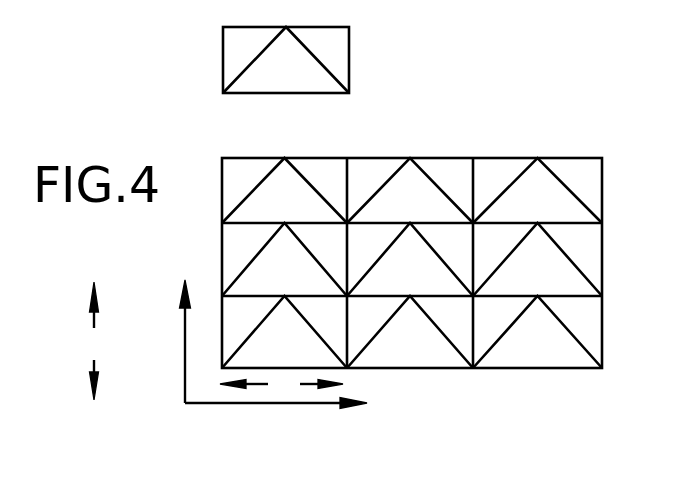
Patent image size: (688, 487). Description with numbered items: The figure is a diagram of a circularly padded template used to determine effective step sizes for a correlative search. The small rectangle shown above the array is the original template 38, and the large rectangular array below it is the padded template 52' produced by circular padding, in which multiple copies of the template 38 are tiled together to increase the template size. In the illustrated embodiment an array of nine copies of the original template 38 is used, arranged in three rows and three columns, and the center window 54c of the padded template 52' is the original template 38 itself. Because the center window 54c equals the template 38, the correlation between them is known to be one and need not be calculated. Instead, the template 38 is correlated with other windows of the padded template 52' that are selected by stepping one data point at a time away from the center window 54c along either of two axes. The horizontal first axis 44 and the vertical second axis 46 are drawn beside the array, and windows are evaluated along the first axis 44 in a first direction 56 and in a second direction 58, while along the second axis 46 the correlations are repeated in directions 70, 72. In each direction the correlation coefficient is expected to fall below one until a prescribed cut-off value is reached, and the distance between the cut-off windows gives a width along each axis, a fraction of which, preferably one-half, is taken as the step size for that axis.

The template 38 is at (349, 63).
The padded template 52' is at (412, 209).
The center window 54c is at (387, 214).
The second axis 46 is at (185, 330).
The first axis 44 is at (272, 403).
The first direction 56 is at (262, 386).
The second direction 58 is at (303, 386).
The direction along second axis 70 is at (94, 317).
The direction along second axis 72 is at (92, 366).